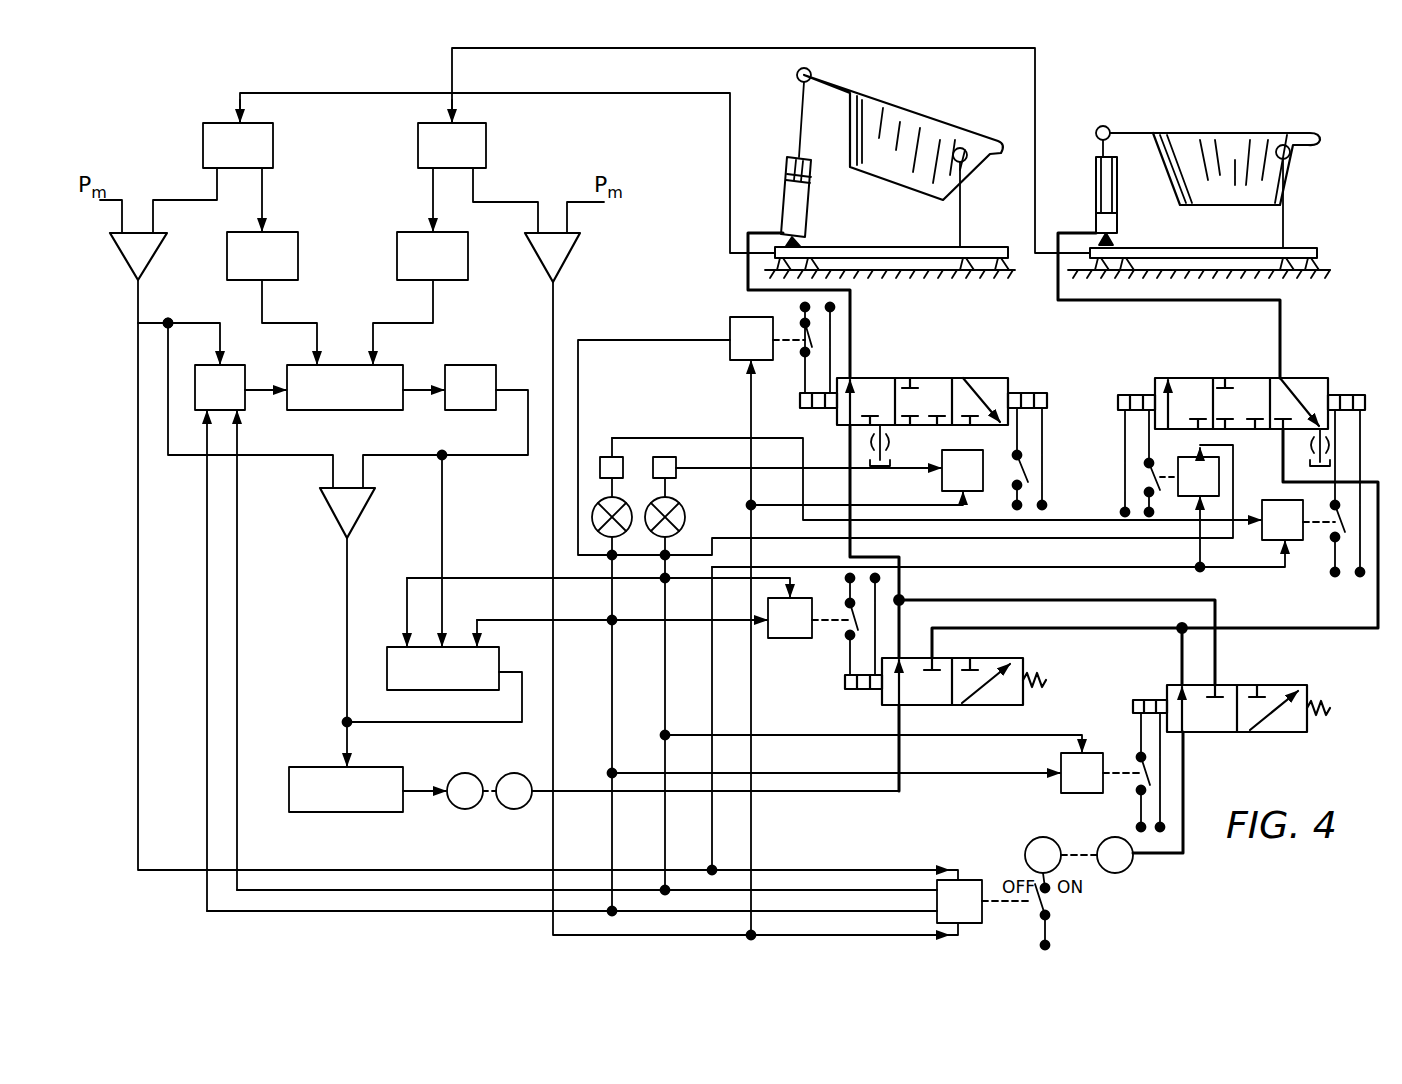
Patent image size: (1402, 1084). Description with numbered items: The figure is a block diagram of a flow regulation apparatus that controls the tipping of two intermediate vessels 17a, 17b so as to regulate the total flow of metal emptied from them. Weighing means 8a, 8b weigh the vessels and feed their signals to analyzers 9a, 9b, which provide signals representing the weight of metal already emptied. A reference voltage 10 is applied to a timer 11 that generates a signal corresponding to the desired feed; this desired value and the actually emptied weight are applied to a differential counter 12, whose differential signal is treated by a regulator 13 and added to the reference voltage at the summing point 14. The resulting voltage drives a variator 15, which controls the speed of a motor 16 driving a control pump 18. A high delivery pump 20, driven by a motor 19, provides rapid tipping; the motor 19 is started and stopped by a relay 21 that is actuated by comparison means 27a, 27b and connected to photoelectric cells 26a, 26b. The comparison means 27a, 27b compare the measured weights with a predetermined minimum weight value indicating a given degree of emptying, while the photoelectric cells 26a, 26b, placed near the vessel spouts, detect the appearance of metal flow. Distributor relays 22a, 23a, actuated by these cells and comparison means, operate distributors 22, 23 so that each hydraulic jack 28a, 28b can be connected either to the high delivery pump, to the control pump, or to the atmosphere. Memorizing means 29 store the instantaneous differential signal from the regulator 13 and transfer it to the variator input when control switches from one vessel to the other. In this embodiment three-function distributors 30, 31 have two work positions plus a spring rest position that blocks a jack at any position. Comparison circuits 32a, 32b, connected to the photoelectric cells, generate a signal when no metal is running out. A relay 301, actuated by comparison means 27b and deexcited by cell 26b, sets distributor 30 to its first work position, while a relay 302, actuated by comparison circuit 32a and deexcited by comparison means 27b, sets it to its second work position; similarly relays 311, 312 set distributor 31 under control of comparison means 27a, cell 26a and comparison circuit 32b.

The weighing means 8a is at (222, 130).
The weighing means 8b is at (440, 130).
The analyzer 9a is at (287, 244).
The analyzer 9b is at (420, 244).
The reference voltage 10 is at (158, 306).
The timer 11 is at (220, 378).
The differential counter 12 is at (378, 375).
The regulator 13 is at (478, 378).
The summing point 14 is at (348, 535).
The variator 15 is at (333, 780).
The motor 16 is at (470, 800).
The vessel 17a is at (1005, 100).
The vessel 17b is at (1205, 145).
The pump 18 is at (520, 806).
The motor 19 is at (1040, 845).
The high delivery pump 20 is at (1115, 845).
The relay 21 is at (968, 875).
The distributor 22 is at (985, 665).
The distributor relay 22a is at (795, 640).
The distributor 23 is at (1230, 688).
The distributor relay 23a is at (1078, 775).
The photoelectric cell 26a is at (683, 532).
The photoelectric cell 26b is at (600, 520).
The comparison means 27a is at (141, 262).
The comparison means 27b is at (570, 250).
The hydraulic jack 28a is at (812, 220).
The hydraulic jack 28b is at (1110, 220).
The memorizing means 29 is at (425, 672).
The three-function distributor 30 is at (985, 348).
The three-function distributor 31 is at (1250, 378).
The relay 301 is at (745, 335).
The relay 302 is at (958, 488).
The relay 311 is at (1195, 480).
The relay 312 is at (1280, 518).
The comparison circuit 32a is at (668, 468).
The comparison circuit 32b is at (615, 468).